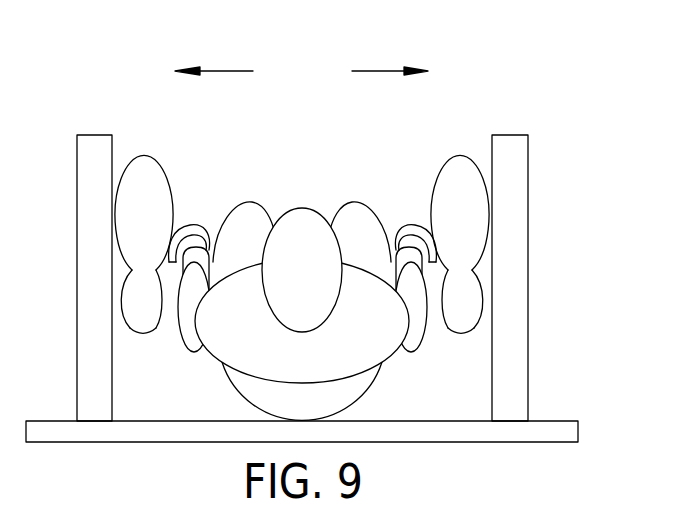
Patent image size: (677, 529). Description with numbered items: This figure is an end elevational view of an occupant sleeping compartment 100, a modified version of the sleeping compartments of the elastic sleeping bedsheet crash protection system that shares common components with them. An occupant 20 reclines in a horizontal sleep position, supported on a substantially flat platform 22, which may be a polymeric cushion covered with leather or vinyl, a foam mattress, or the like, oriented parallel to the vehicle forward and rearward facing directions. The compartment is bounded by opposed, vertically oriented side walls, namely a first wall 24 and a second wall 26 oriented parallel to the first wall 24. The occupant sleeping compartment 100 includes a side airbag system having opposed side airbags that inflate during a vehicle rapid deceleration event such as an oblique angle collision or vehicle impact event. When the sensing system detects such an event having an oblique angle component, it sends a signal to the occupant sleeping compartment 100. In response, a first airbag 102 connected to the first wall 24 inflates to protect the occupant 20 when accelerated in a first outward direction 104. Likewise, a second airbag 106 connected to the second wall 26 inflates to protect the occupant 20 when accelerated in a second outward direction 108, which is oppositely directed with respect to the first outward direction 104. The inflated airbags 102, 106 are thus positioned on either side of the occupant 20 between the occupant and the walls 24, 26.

The occupant sleeping compartment 100 is at (478, 70).
The occupant 20 is at (365, 278).
The platform 22 is at (560, 428).
The first wall 24 is at (520, 183).
The second wall 26 is at (84, 160).
The first airbag 102 is at (448, 180).
The first outward direction 104 is at (380, 71).
The second airbag 106 is at (163, 190).
The second outward direction 108 is at (227, 71).